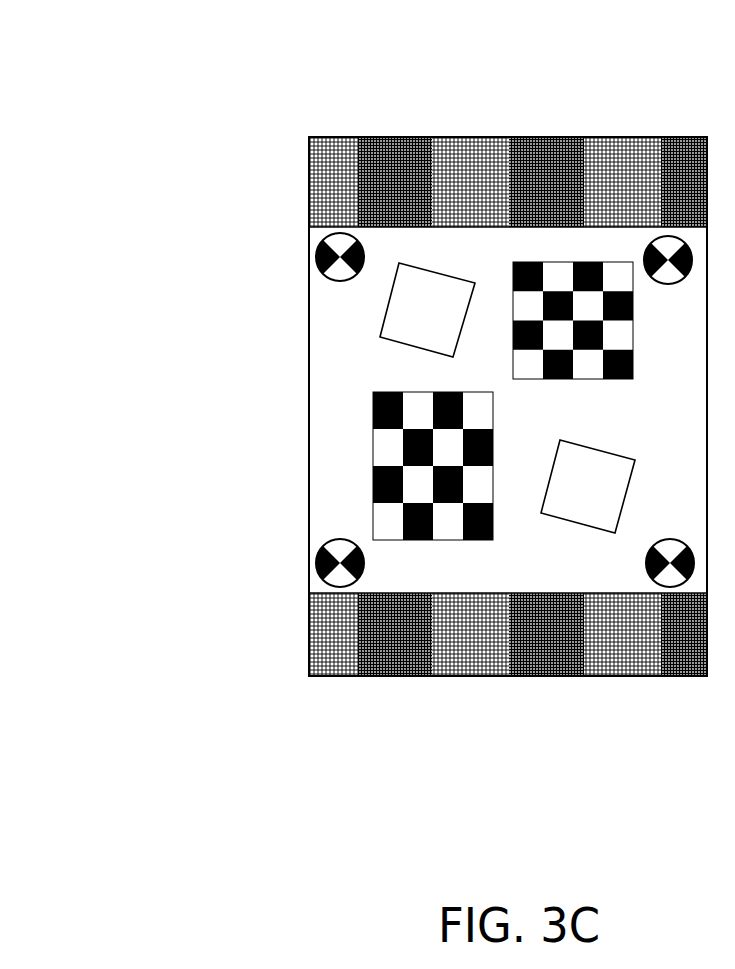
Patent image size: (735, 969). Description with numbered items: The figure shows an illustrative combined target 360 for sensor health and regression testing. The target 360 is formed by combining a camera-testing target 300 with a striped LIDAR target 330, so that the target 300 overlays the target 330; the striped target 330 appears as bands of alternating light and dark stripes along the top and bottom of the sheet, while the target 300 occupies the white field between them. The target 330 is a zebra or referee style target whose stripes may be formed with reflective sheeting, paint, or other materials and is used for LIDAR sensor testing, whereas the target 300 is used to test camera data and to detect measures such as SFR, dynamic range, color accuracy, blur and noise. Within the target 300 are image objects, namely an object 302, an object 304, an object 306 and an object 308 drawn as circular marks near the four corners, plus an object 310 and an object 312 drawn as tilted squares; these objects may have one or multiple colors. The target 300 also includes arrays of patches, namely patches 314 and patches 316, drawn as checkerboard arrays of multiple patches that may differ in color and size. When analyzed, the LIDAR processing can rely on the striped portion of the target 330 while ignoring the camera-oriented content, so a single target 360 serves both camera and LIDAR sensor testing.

The target 360 is at (80, 47).
The target 300 is at (300, 405).
The target 330 is at (306, 156).
The object 302 is at (344, 282).
The object 304 is at (670, 285).
The object 306 is at (338, 538).
The object 308 is at (670, 538).
The object 310 is at (442, 272).
The object 312 is at (599, 449).
The patches 314 is at (633, 338).
The patches 316 is at (493, 438).